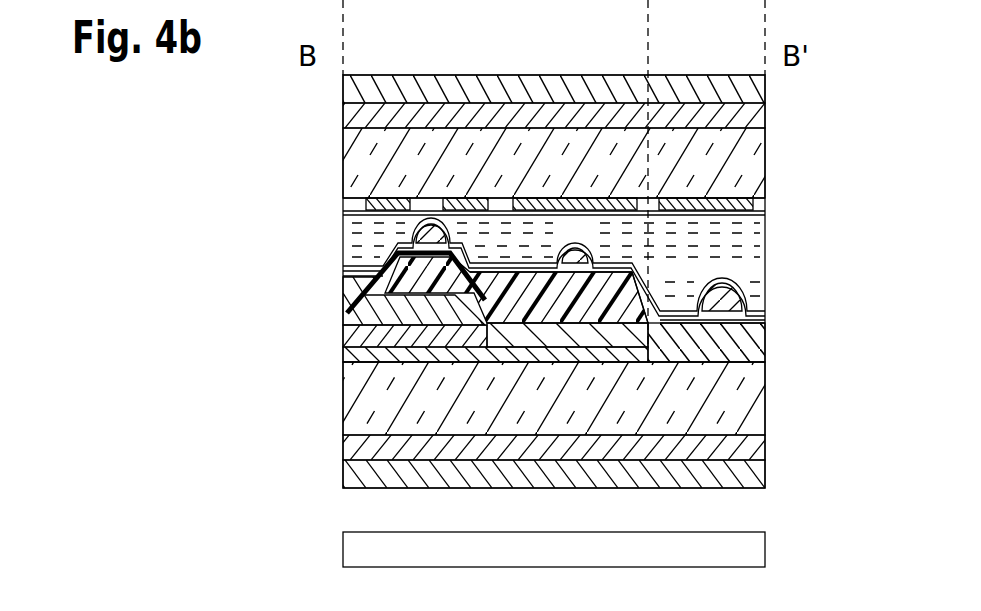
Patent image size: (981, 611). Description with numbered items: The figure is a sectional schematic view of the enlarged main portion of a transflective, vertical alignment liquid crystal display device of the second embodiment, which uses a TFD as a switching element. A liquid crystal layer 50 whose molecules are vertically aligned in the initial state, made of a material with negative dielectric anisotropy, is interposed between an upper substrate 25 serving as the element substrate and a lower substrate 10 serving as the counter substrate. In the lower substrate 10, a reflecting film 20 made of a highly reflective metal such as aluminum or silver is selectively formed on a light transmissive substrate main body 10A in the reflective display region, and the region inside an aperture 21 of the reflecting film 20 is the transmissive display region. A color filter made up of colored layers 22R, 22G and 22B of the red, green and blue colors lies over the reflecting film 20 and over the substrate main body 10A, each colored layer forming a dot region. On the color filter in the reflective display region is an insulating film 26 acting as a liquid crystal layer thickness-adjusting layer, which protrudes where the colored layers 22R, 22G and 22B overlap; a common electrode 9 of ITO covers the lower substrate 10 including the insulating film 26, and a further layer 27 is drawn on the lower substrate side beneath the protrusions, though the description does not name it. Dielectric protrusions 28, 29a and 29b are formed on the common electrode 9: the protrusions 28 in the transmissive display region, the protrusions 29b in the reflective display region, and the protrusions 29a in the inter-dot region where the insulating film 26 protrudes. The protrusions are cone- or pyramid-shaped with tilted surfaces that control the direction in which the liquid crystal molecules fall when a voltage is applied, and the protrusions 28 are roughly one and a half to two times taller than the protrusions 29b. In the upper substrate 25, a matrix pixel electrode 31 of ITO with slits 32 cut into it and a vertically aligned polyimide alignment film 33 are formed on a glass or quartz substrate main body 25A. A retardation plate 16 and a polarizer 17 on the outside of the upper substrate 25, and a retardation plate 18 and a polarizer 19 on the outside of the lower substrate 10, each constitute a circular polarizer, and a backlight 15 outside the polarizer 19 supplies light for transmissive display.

The upper substrate 25 is at (256, 80).
The polarizer 17 is at (765, 84).
The retardation plate 16 is at (765, 110).
The substrate main body 25A is at (765, 145).
The pixel electrode 31 is at (765, 200).
The slits 32 is at (366, 203).
The alignment film 33 is at (765, 212).
The liquid crystal layer 50 is at (765, 250).
The protrusions 28 is at (765, 287).
The protrusions 29a is at (408, 231).
The protrusions 29b is at (577, 247).
The pixel electrode 27 is at (765, 313).
The common electrode 9 is at (765, 320).
The lower substrate 10 is at (256, 260).
The colored layer 22G is at (343, 275).
The insulating film 26 is at (343, 310).
The colored layer 22B is at (343, 338).
The colored layer 22R is at (765, 345).
The reflecting film 20 is at (343, 355).
The substrate main body 10A is at (765, 410).
The retardation plate 18 is at (765, 448).
The polarizer 19 is at (765, 470).
The aperture 21 is at (653, 318).
The backlight 15 is at (765, 545).